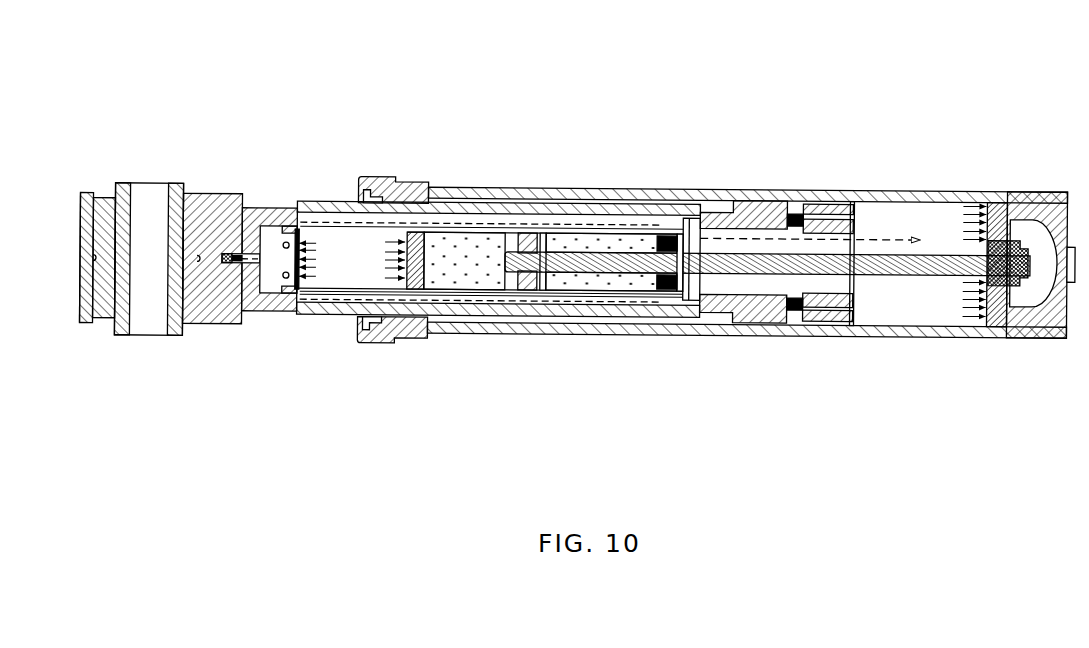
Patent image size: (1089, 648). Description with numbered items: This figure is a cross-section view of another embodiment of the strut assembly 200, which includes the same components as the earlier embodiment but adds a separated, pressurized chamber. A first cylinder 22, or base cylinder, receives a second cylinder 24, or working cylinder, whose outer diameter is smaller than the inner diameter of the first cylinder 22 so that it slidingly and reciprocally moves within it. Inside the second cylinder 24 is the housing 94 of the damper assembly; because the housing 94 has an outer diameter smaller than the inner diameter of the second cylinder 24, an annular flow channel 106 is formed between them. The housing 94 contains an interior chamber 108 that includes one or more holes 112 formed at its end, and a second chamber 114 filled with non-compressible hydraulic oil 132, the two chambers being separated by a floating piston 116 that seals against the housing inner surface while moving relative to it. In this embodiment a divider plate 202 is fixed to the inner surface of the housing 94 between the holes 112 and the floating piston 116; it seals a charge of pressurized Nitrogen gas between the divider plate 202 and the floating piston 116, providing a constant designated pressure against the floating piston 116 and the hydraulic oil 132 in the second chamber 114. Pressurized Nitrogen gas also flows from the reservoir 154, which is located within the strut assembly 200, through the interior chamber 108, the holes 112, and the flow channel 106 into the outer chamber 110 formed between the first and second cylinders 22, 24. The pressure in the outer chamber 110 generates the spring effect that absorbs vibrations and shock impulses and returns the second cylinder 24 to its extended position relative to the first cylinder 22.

The strut assembly 200 is at (614, 106).
The first cylinder 22 is at (858, 190).
The second cylinder 24 is at (262, 221).
The reservoir 154 is at (224, 255).
The interior chamber 108 is at (270, 241).
The holes 112 is at (287, 279).
The divider plate 202 is at (302, 222).
The floating piston 116 is at (427, 231).
The flow channel 106 is at (522, 231).
The hydraulic oil 132 is at (636, 240).
The housing 94 is at (566, 288).
The second chamber 114 is at (633, 287).
The outer chamber 110 is at (753, 243).